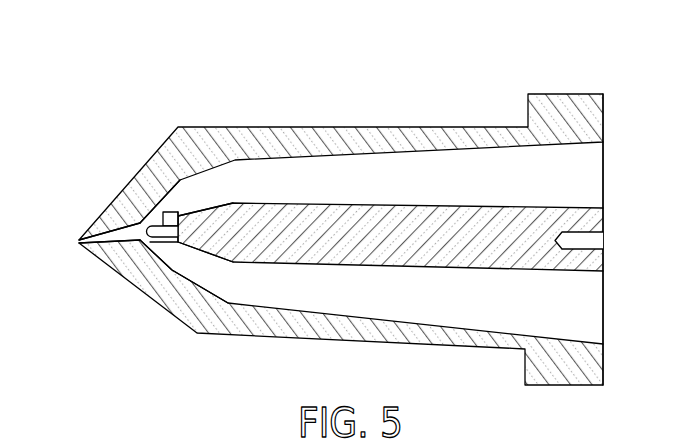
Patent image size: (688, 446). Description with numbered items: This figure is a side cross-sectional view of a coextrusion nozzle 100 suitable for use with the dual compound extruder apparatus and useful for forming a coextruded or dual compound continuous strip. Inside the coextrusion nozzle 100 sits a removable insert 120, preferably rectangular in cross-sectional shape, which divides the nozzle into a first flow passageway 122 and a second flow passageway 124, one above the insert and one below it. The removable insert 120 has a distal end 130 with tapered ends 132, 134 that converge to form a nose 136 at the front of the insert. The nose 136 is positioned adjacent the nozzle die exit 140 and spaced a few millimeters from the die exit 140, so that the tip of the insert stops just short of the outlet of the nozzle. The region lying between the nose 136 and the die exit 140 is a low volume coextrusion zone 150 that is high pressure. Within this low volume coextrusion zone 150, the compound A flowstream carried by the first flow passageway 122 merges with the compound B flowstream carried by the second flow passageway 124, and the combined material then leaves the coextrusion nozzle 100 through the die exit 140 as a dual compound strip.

The coextrusion nozzle 100 is at (339, 201).
The removable insert 120 is at (375, 232).
The first flow passageway 122 is at (594, 176).
The second flow passageway 124 is at (594, 309).
The distal end 130 is at (150, 142).
The tapered end 132 is at (232, 203).
The tapered end 134 is at (207, 255).
The nose 136 is at (165, 211).
The nozzle die exit 140 is at (93, 228).
The low volume coextrusion zone 150 is at (142, 229).